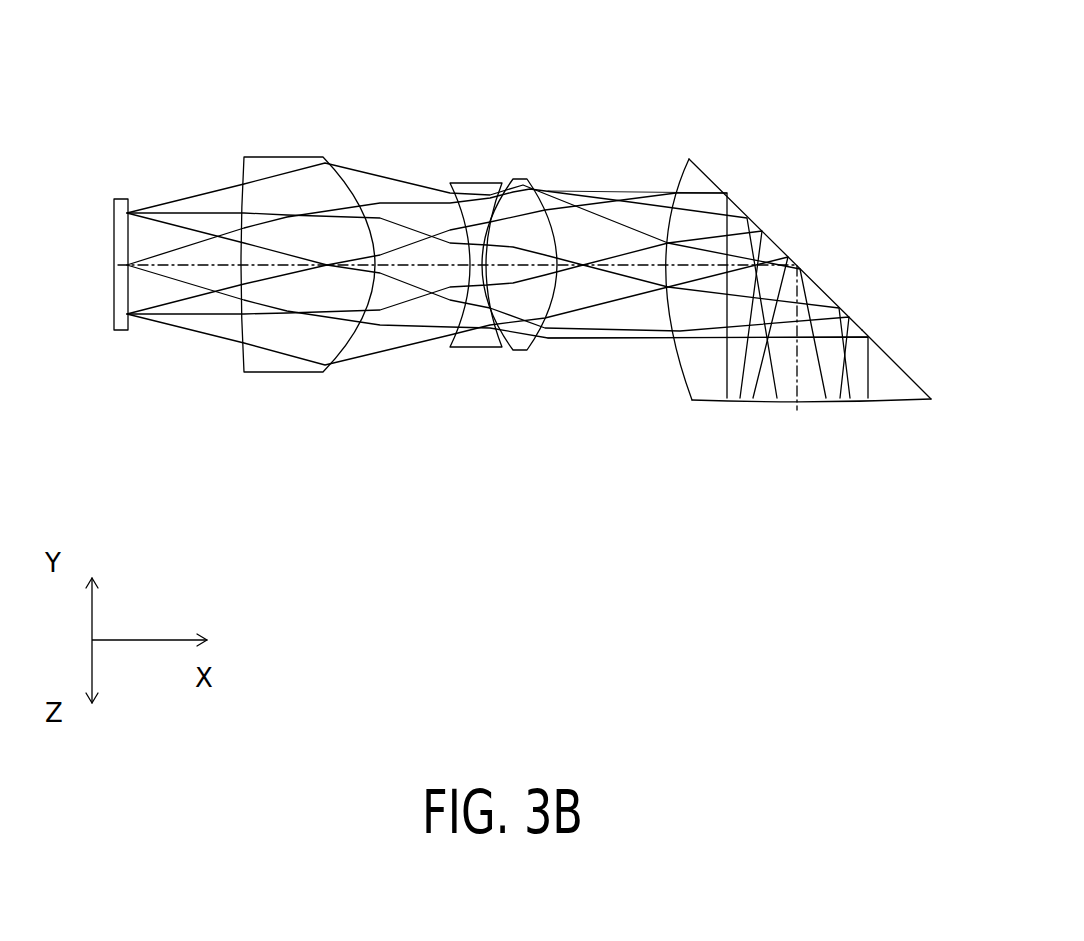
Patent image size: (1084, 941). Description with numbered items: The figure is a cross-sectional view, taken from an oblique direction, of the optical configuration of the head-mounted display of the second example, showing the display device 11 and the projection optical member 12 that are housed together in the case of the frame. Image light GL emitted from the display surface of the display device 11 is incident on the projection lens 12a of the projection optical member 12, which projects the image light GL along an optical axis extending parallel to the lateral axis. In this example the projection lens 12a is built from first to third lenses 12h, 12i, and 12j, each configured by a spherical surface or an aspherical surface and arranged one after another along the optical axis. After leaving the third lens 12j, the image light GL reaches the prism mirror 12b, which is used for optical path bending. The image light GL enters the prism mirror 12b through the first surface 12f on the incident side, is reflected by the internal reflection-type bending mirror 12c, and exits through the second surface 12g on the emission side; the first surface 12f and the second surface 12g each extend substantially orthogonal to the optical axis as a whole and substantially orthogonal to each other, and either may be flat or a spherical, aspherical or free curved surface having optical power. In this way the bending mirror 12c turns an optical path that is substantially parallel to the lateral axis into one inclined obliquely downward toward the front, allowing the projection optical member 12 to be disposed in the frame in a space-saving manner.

The display device 11 is at (122, 199).
The projection optical member 12 is at (771, 289).
The projection lens 12a is at (555, 150).
The prism mirror 12b is at (801, 278).
The bending mirror 12c is at (890, 358).
The first surface 12f is at (677, 186).
The second surface 12g is at (832, 399).
The first lens 12h is at (278, 365).
The second lens 12i is at (477, 342).
The third lens 12j is at (523, 352).
The image light GL is at (573, 338).